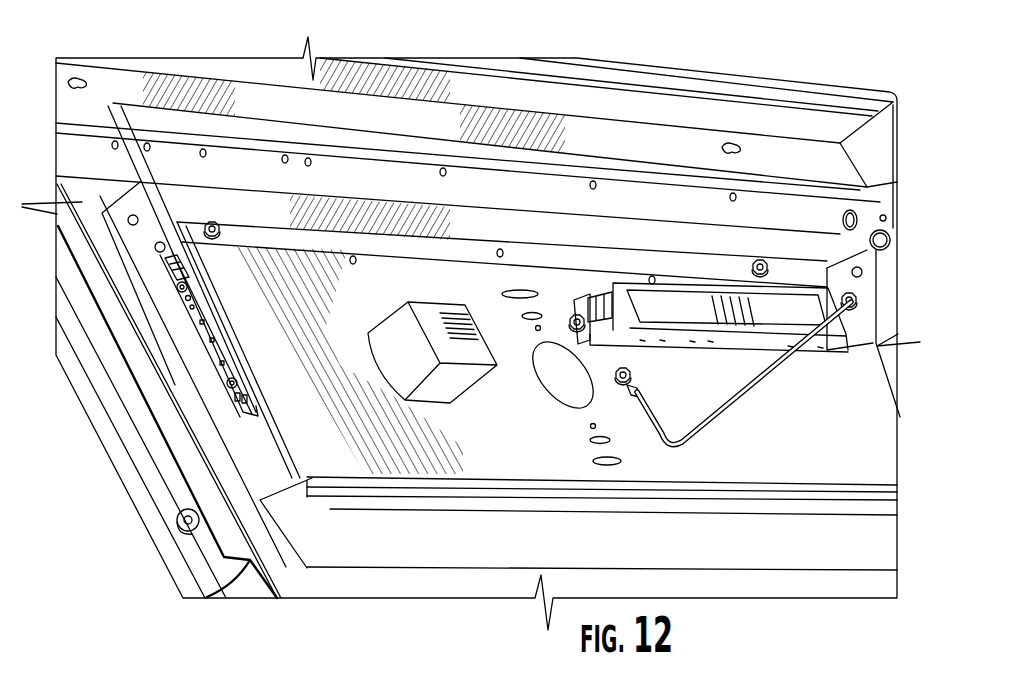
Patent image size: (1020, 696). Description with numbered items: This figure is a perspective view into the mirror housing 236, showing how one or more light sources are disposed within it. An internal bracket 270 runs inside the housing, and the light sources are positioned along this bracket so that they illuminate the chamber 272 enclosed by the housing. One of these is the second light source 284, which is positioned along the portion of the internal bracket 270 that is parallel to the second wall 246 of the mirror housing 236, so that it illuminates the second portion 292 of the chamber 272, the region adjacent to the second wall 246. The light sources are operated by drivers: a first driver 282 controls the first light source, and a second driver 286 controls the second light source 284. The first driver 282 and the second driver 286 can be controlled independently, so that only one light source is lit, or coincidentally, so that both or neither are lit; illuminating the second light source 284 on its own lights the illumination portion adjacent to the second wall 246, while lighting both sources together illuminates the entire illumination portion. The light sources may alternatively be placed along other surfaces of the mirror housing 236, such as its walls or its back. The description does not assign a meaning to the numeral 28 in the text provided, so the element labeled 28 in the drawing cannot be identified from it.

The frame 28 is at (115, 66).
The mirror housing 236 is at (787, 127).
The internal bracket 270 is at (558, 195).
The chamber 272 is at (493, 552).
The first driver 282 is at (697, 307).
The second light source 284 is at (214, 349).
The second driver 286 is at (463, 382).
The second portion 292 is at (140, 313).
The second wall 246 is at (192, 452).